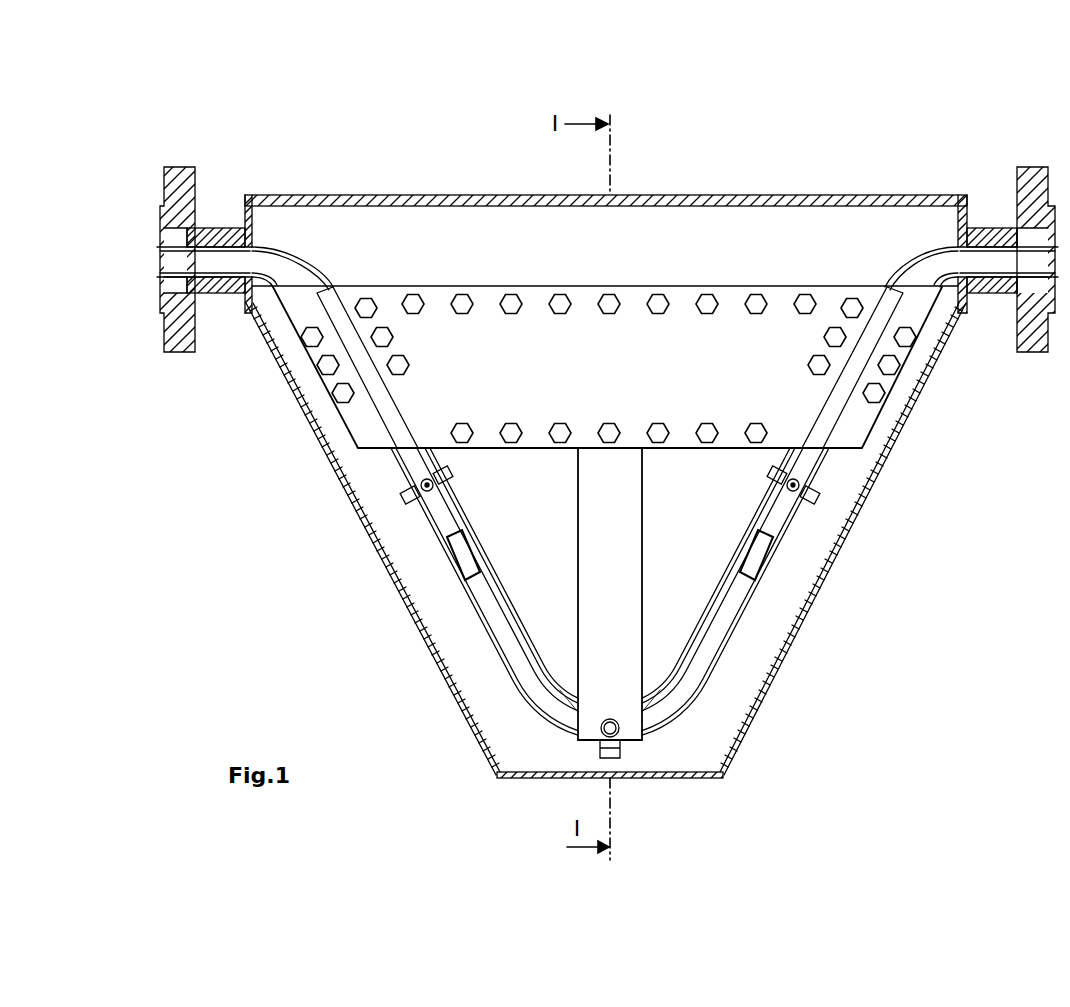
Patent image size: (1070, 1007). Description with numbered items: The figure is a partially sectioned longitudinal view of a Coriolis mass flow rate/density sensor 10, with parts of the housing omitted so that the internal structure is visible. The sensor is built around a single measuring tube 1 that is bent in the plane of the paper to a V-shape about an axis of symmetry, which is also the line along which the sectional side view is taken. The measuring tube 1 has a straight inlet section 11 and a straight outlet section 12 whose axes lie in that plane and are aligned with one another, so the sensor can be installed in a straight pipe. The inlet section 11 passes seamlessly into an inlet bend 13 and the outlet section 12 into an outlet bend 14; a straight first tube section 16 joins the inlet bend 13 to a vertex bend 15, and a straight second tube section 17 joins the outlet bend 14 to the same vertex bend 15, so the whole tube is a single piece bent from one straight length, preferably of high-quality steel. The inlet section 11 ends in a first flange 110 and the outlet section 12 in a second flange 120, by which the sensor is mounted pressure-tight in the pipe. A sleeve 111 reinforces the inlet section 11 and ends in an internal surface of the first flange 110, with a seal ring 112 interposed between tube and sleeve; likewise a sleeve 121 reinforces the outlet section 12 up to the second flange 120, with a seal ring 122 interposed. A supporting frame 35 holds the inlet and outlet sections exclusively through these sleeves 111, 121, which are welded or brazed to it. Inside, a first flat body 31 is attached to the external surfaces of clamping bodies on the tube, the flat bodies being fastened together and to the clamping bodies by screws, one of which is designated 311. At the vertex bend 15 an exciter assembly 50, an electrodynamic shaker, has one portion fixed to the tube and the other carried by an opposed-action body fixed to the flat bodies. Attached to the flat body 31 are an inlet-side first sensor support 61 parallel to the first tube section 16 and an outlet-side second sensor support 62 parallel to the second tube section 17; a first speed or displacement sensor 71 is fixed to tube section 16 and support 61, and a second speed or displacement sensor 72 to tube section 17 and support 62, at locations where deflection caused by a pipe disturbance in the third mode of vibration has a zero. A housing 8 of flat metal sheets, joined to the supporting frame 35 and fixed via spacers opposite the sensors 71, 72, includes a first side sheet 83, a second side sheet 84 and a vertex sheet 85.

The measuring tube 1 is at (515, 710).
The housing 8 is at (518, 787).
The Coriolis mass flow rate/density sensor 10 is at (788, 160).
The inlet section 11 is at (202, 256).
The outlet section 12 is at (977, 253).
The inlet bend 13 is at (283, 252).
The outlet bend 14 is at (930, 263).
The vertex bend 15 is at (668, 718).
The first tube section 16 is at (485, 608).
The second tube section 17 is at (738, 608).
The first flat body 31 is at (358, 422).
The supporting frame 35 is at (685, 197).
The exciter assembly 50 is at (622, 745).
The first sensor support 61 is at (450, 535).
The second sensor support 62 is at (770, 532).
The first speed or displacement sensor 71 is at (405, 497).
The second speed or displacement sensor 72 is at (812, 500).
The first side sheet 83 is at (400, 601).
The second side sheet 84 is at (895, 450).
The vertex sheet 85 is at (566, 778).
The first flange 110 is at (183, 167).
The sleeve 111 is at (222, 233).
The seal ring 112 is at (226, 283).
The second flange 120 is at (1037, 172).
The sleeve 121 is at (1003, 228).
The seal ring 122 is at (990, 282).
The screw 311 is at (512, 297).